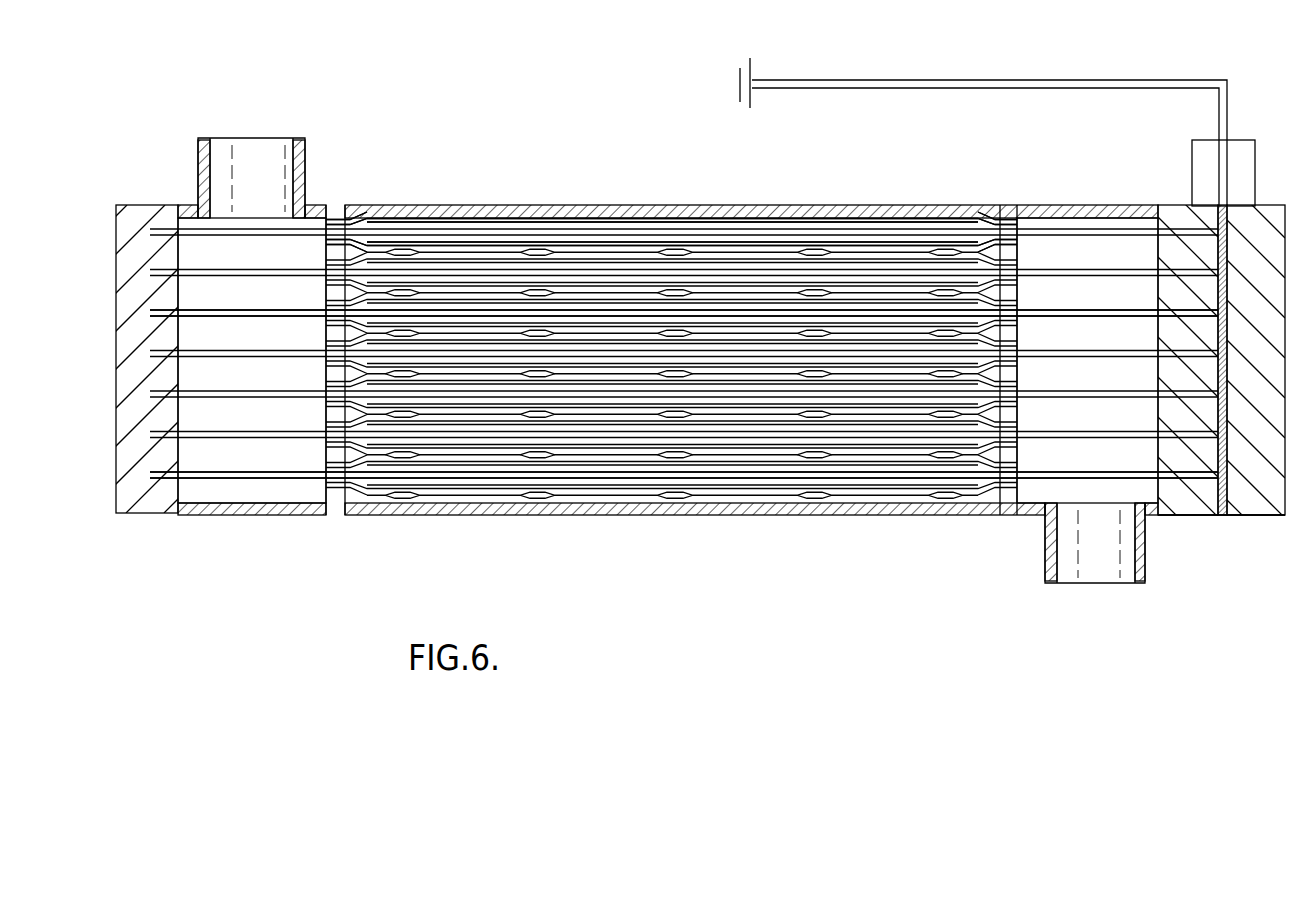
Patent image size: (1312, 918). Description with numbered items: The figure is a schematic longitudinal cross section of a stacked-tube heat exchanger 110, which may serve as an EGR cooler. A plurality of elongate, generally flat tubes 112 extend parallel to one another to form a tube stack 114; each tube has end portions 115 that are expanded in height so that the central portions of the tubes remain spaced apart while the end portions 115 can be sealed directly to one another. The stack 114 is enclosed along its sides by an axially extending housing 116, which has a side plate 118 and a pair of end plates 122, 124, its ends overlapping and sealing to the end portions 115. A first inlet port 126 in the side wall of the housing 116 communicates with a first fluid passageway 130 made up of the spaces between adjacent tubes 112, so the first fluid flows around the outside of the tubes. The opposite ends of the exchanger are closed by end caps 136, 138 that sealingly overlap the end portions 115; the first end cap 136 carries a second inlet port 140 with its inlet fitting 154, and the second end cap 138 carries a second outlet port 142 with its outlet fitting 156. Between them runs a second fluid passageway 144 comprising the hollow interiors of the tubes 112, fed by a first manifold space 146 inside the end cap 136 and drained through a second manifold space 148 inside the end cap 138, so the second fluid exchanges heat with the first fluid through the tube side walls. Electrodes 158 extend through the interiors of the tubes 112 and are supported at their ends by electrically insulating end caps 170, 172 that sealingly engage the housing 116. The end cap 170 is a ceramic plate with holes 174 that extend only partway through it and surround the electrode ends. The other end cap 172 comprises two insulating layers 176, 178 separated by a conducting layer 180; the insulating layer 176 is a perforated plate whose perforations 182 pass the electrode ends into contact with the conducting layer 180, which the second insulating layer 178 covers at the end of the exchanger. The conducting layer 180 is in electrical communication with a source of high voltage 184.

The heat exchanger 110 is at (322, 527).
The tubes 112 is at (597, 405).
The tube stack 114 is at (753, 206).
The end portions 115 is at (1010, 225).
The housing 116 is at (478, 206).
The side plate 118 is at (874, 295).
The end plate 122 is at (797, 206).
The end plate 124 is at (598, 515).
The first inlet port 126 is at (902, 335).
The first fluid passageway 130 is at (858, 462).
The first end cap 136 is at (172, 185).
The second end cap 138 is at (1191, 532).
The second inlet port 140 is at (248, 210).
The second outlet port 142 is at (1097, 512).
The second fluid passageway 144 is at (328, 362).
The first manifold space 146 is at (222, 465).
The second manifold space 148 is at (1085, 255).
The inlet fitting 154 is at (303, 163).
The outlet fitting 156 is at (1045, 550).
The electrode 158 is at (200, 305).
The end cap 170 is at (120, 515).
The end cap 172 is at (1260, 515).
The holes 174 is at (165, 470).
The insulating layer 176 is at (1165, 515).
The second insulating layer 178 is at (1281, 205).
The conducting layer 180 is at (1222, 515).
The perforations 182 is at (1172, 232).
The source of high voltage 184 is at (1228, 140).